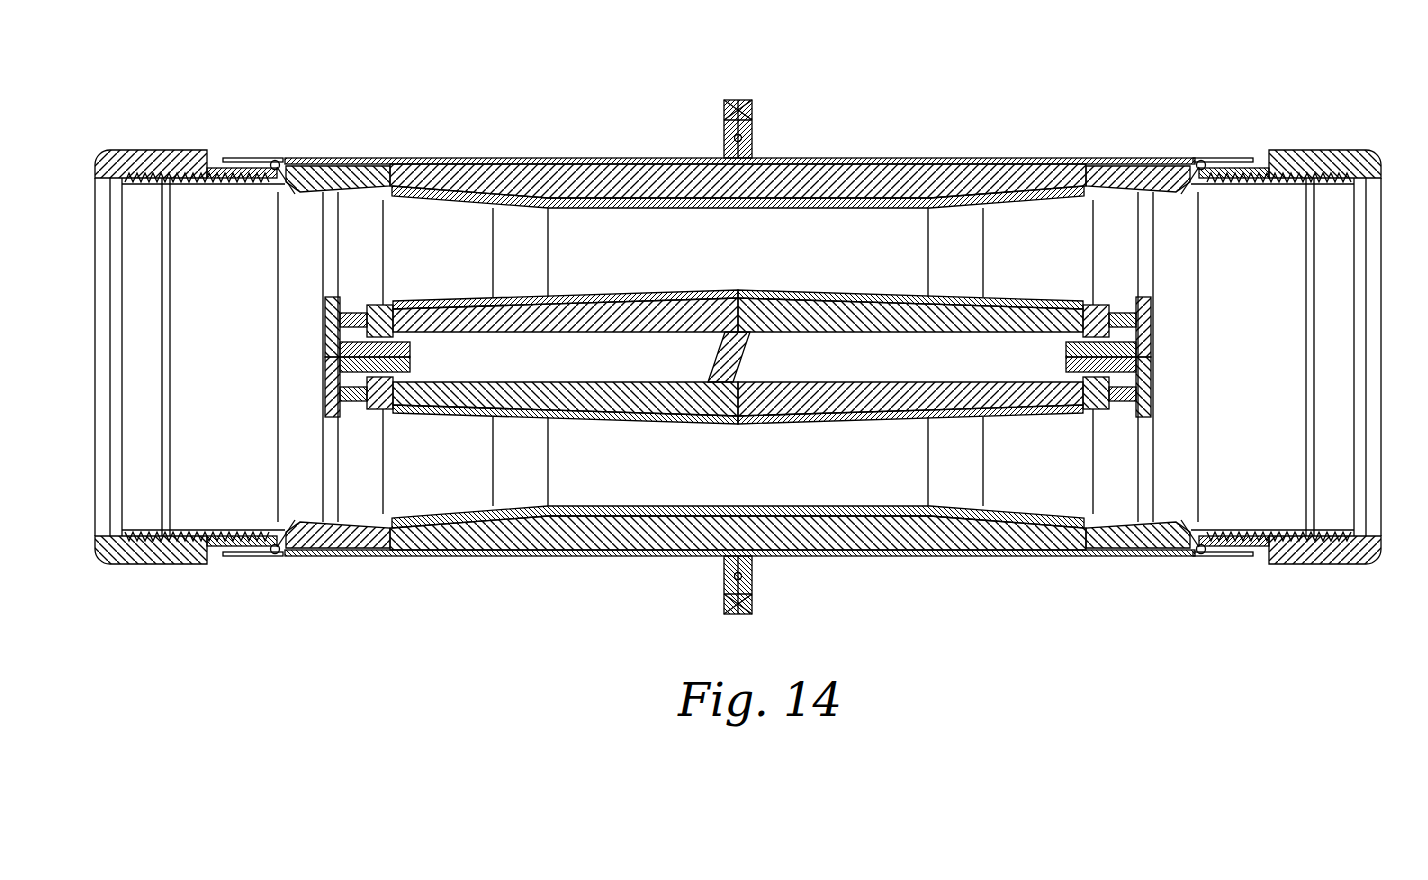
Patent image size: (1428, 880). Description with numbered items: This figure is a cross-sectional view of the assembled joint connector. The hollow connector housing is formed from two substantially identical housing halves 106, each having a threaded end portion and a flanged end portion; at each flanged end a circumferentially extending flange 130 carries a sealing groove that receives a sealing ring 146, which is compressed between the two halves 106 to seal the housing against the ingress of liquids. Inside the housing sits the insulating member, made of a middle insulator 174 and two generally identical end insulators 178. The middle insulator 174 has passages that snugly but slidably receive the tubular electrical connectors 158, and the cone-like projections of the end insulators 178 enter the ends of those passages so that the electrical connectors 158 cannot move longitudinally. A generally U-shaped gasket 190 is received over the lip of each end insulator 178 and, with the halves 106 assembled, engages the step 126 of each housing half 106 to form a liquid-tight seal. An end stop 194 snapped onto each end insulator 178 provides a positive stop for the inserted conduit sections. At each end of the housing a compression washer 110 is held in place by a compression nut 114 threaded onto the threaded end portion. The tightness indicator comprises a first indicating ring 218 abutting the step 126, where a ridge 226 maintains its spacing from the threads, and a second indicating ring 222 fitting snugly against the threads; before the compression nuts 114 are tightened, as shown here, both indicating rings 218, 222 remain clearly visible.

The housing half 106 is at (892, 158).
The compression washer 110 is at (1360, 158).
The compression nut 114 is at (1320, 150).
The step 126 is at (252, 160).
The flange 130 is at (745, 100).
The sealing ring 146 is at (757, 140).
The electrical connector 158 is at (578, 160).
The middle insulator 174 is at (633, 160).
The end insulator 178 is at (403, 160).
The gasket 190 is at (288, 162).
The end stop 194 is at (375, 162).
The first indicating ring 218 is at (1232, 160).
The second indicating ring 222 is at (1262, 160).
The ridge 226 is at (1186, 160).